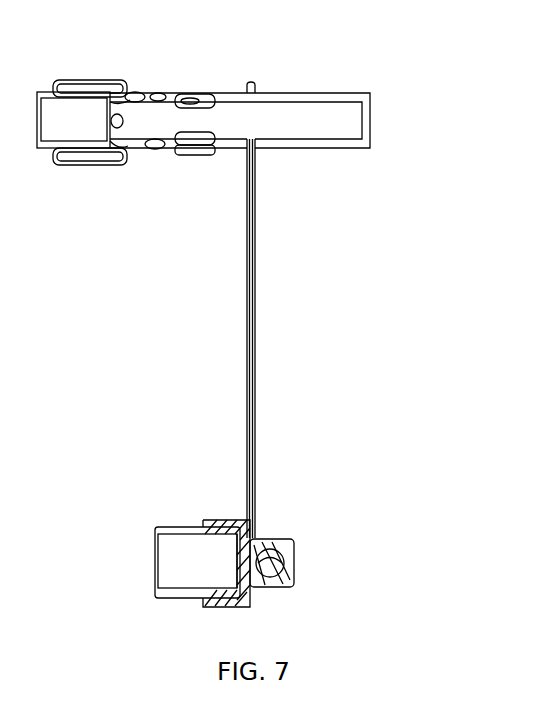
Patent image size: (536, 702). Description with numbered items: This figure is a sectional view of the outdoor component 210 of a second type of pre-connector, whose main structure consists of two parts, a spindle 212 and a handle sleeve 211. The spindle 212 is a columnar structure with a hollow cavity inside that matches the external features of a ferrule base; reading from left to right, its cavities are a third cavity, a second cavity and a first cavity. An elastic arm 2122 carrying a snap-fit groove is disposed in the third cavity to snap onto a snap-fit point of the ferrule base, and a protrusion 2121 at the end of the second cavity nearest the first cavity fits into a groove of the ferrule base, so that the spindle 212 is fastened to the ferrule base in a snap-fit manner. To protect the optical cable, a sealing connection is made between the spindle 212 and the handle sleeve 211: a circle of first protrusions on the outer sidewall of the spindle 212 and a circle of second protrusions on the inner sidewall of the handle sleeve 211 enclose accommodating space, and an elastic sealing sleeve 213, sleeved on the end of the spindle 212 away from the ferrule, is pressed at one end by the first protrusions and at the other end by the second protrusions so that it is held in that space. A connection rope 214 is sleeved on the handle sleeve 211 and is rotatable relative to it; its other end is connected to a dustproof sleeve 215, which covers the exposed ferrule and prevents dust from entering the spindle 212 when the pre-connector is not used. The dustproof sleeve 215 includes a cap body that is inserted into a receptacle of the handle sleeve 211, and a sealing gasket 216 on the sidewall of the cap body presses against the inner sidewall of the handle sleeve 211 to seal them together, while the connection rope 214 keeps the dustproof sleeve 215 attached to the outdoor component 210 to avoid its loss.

The outdoor component 210 is at (368, 210).
The handle sleeve 211 is at (88, 80).
The spindle 212 is at (135, 97).
The protrusion 2121 is at (119, 124).
The elastic arm 2122 is at (183, 100).
The elastic sealing sleeve 213 is at (155, 149).
The connection rope 214 is at (254, 353).
The dustproof sleeve 215 is at (280, 547).
The sealing gasket 216 is at (188, 528).